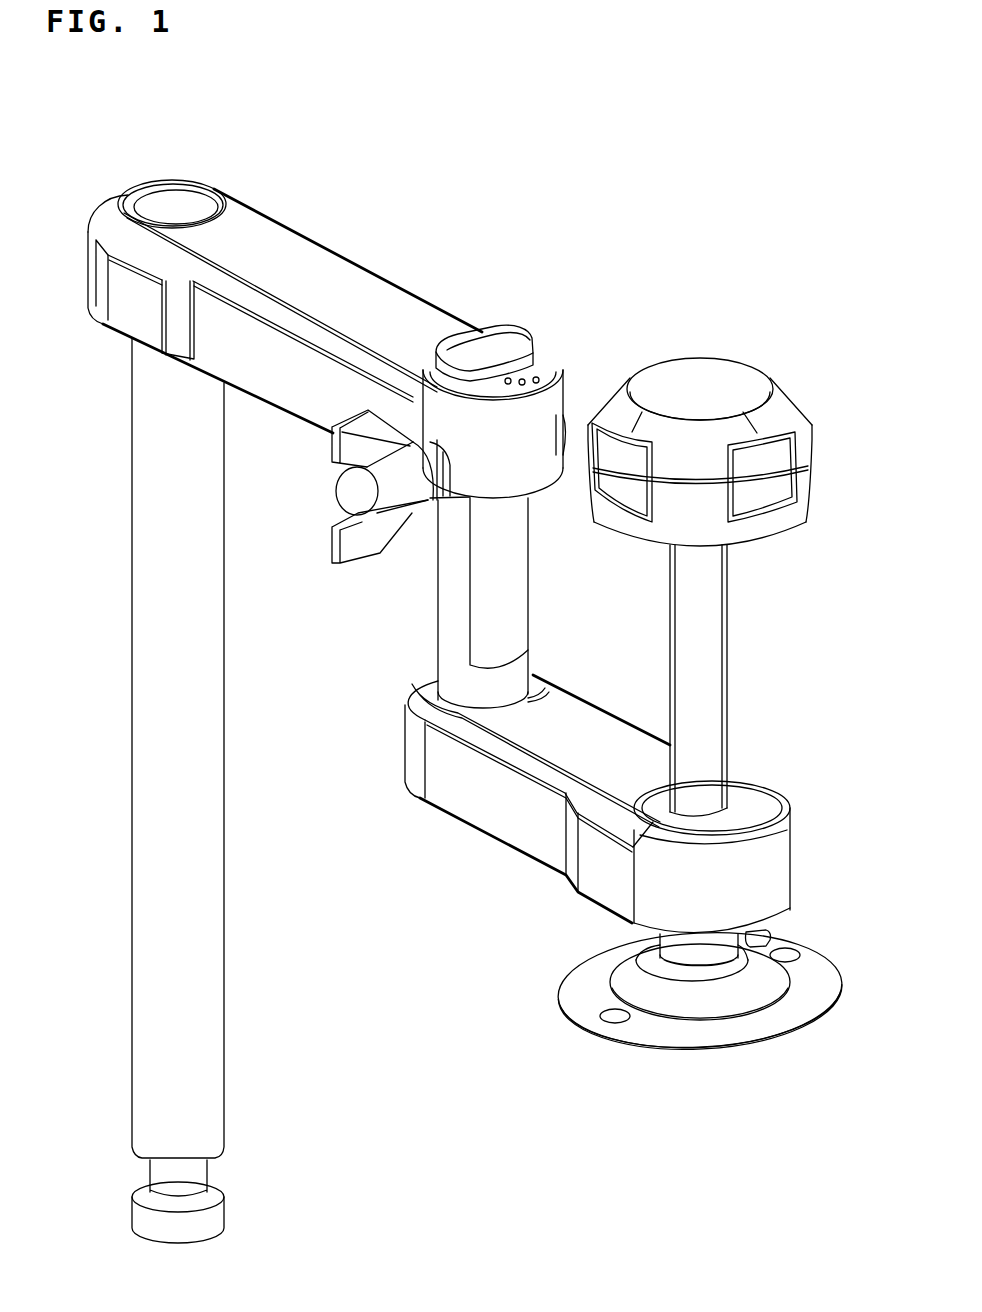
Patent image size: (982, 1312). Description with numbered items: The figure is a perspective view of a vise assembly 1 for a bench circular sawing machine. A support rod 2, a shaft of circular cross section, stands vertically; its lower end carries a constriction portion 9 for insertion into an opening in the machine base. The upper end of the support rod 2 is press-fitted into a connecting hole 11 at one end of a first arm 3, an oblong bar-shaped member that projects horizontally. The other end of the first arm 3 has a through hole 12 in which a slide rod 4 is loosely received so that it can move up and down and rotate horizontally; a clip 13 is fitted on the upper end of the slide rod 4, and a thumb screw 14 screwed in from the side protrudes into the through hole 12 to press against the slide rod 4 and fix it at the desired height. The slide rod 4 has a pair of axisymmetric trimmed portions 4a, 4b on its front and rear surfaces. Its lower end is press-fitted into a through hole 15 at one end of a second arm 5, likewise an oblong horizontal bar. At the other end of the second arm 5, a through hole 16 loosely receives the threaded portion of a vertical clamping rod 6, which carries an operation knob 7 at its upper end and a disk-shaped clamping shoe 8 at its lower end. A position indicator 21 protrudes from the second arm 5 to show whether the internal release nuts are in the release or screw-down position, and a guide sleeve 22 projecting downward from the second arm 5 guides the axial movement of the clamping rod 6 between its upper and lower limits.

The vise assembly 1 is at (587, 276).
The support rod 2 is at (140, 691).
The first arm 3 is at (360, 282).
The slide rod 4 is at (455, 641).
The trimmed portion 4a is at (508, 566).
The trimmed portion 4b is at (432, 588).
The second arm 5 is at (500, 810).
The clamping rod 6 is at (712, 654).
The operation knob 7 is at (805, 398).
The clamping shoe 8 is at (818, 979).
The constriction portion 9 is at (200, 1168).
The connecting hole 11 is at (225, 190).
The through hole 12 is at (481, 396).
The clip 13 is at (440, 346).
The thumb screw 14 is at (356, 492).
The through hole 15 is at (540, 690).
The through hole 16 is at (750, 800).
The position indicator 21 is at (772, 934).
The guide sleeve 22 is at (697, 952).